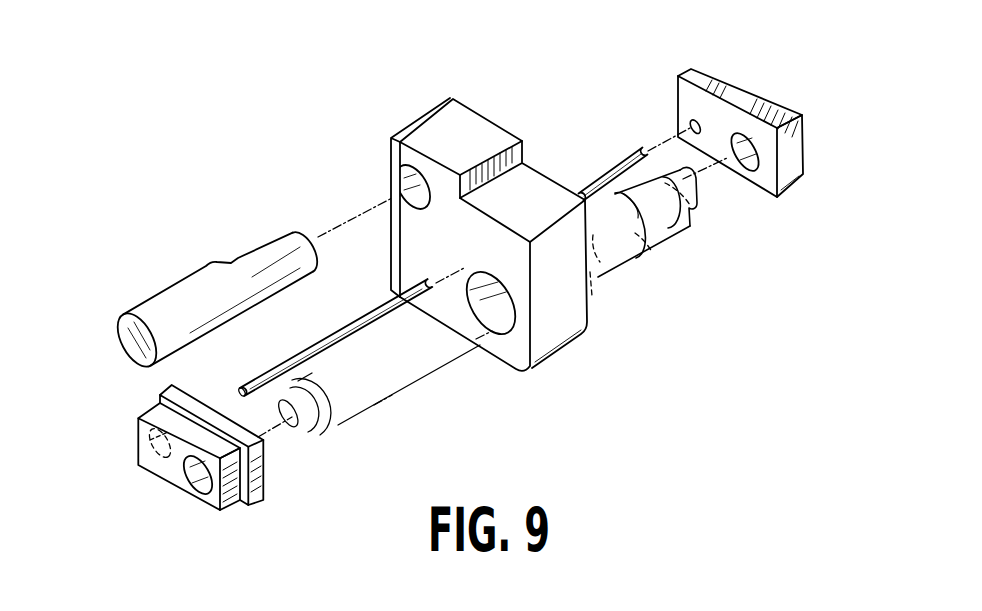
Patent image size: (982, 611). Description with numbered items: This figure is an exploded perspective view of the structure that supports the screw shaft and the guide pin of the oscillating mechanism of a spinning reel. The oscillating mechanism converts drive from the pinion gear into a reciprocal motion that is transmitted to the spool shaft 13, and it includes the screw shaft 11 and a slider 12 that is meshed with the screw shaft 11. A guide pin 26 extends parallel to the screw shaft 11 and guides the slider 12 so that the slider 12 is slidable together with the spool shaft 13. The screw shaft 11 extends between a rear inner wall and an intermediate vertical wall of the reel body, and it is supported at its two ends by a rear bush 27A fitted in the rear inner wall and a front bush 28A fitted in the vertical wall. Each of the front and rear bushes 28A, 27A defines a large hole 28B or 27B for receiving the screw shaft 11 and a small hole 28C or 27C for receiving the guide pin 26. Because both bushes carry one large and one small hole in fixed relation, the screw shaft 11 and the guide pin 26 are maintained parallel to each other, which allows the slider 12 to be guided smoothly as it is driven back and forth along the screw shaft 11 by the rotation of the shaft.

The screw shaft 11 is at (650, 253).
The slider 12 is at (561, 328).
The spool shaft 13 is at (178, 298).
The guide pin 26 is at (603, 168).
The rear bush 27A is at (722, 91).
The large hole 27B is at (750, 163).
The small hole 27C is at (692, 126).
The front bush 28A is at (262, 477).
The large hole 28B is at (199, 478).
The small hole 28C is at (150, 430).